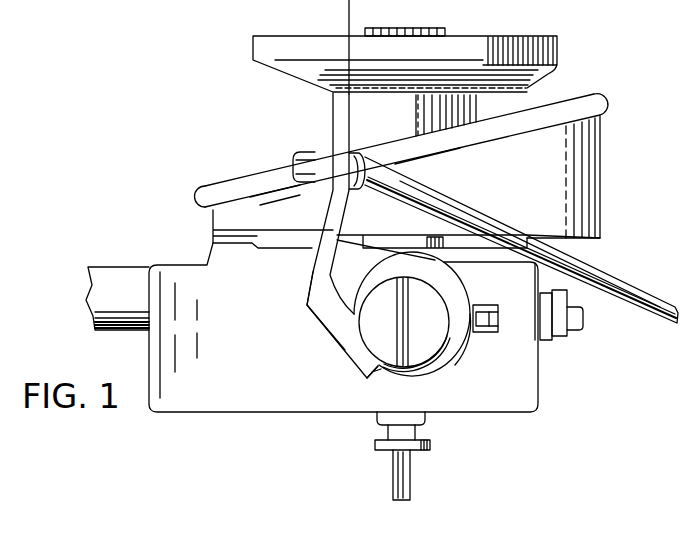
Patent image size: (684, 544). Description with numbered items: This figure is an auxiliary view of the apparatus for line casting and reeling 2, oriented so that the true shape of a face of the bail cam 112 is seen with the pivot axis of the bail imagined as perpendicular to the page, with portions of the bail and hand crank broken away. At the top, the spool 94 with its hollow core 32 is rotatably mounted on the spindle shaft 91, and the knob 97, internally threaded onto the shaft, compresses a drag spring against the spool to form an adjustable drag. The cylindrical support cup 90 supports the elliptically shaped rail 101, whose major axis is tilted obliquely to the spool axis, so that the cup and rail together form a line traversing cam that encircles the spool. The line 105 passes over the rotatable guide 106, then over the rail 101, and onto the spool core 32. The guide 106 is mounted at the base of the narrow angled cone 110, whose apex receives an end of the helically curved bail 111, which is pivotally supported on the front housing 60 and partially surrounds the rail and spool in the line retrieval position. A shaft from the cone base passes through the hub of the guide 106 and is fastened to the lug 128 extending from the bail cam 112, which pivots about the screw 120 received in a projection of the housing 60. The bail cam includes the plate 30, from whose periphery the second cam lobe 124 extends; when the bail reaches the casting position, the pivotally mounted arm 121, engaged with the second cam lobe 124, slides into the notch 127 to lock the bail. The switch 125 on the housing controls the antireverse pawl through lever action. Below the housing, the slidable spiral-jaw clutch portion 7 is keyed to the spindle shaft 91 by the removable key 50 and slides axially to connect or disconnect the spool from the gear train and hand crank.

The line 105 is at (347, 5).
The knob 97 is at (446, 31).
The spool 94 is at (557, 52).
The elliptically shaped rail 101 is at (598, 96).
The hollow core 32 is at (332, 125).
The rotatable guide 106 is at (345, 186).
The narrow angled cone 110 is at (489, 218).
The bail 111 is at (608, 275).
The cylindrical support cup 90 is at (602, 178).
The lug 128 is at (310, 258).
The screw 120 is at (366, 323).
The bail cam 112 is at (350, 345).
The arm 121 is at (496, 310).
The plate 30 is at (468, 342).
The second cam lobe 124 is at (455, 358).
The notch 127 is at (378, 377).
The switch 125 is at (586, 320).
The front housing 60 is at (215, 413).
The slidable spiral-jaw clutch portion 7 is at (376, 445).
The spindle shaft 91 is at (412, 470).
The key 50 is at (394, 484).
The apparatus for line casting and reeling 2 is at (679, 257).